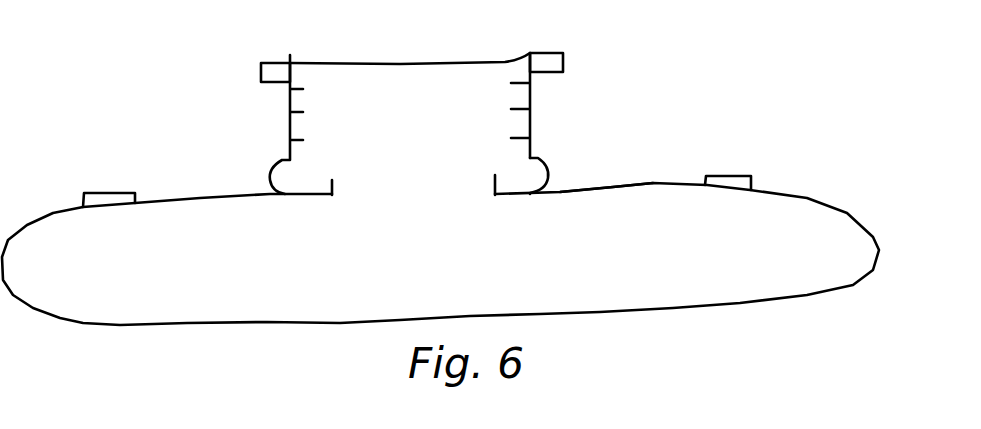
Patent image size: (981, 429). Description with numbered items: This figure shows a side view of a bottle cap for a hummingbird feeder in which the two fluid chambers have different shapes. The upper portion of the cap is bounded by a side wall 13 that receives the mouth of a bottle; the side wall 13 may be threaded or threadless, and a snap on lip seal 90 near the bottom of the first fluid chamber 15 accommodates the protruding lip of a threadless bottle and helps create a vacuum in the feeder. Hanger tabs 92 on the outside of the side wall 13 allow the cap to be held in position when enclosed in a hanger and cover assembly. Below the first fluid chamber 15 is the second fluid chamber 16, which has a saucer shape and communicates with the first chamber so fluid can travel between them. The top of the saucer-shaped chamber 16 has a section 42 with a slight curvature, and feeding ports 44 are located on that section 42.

The side wall 13 is at (289, 130).
The first fluid chamber 15 is at (410, 98).
The second fluid chamber 16 is at (440, 250).
The section 42 is at (612, 185).
The feeding port 44 is at (115, 185).
The snap on lip seal 90 is at (549, 176).
The hanger tab 92 is at (565, 62).